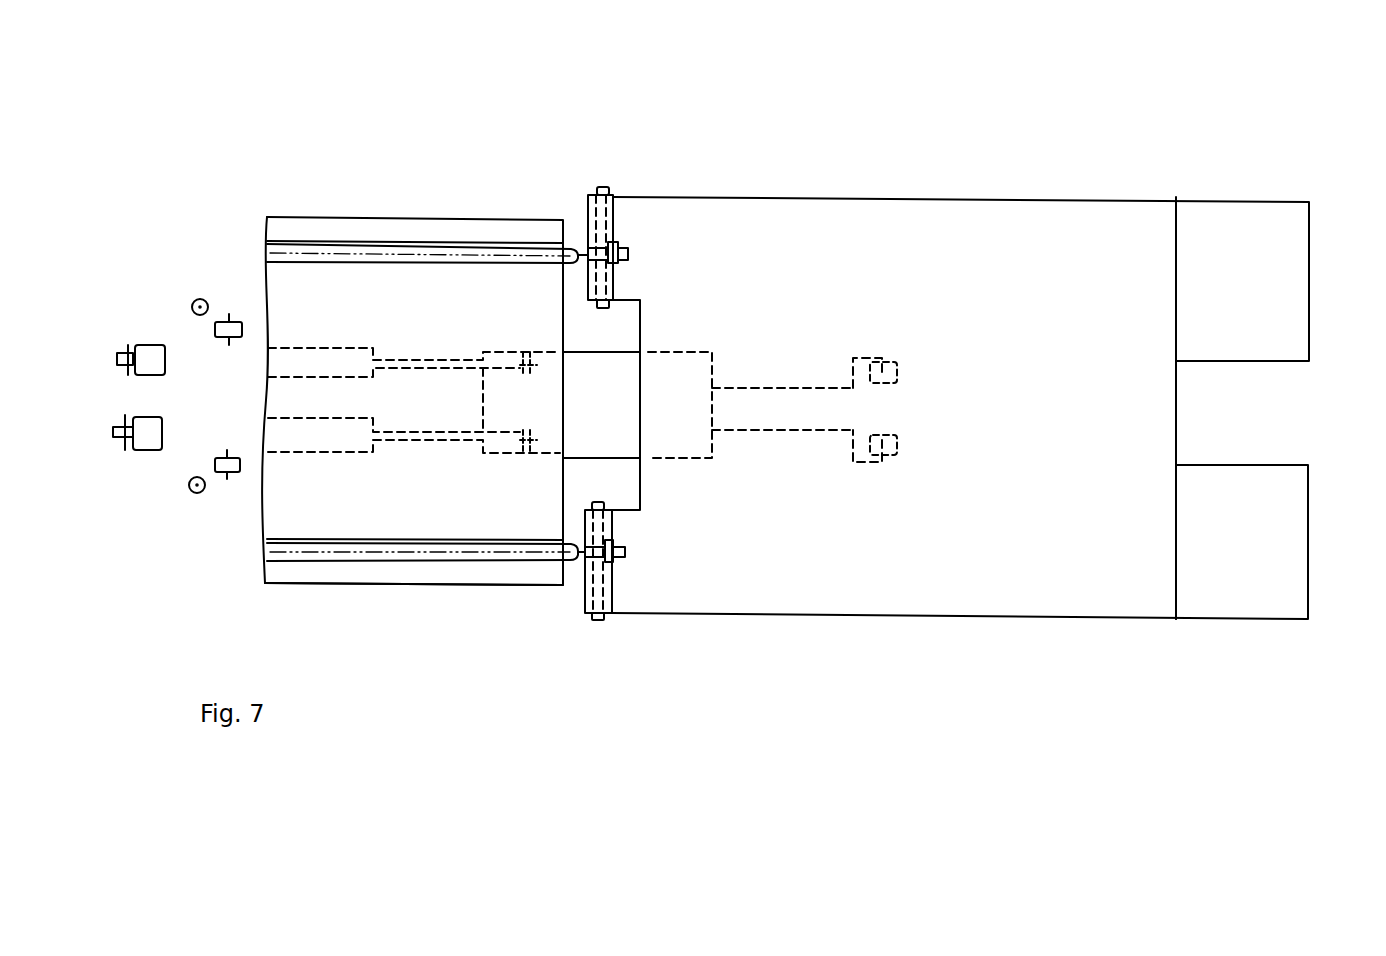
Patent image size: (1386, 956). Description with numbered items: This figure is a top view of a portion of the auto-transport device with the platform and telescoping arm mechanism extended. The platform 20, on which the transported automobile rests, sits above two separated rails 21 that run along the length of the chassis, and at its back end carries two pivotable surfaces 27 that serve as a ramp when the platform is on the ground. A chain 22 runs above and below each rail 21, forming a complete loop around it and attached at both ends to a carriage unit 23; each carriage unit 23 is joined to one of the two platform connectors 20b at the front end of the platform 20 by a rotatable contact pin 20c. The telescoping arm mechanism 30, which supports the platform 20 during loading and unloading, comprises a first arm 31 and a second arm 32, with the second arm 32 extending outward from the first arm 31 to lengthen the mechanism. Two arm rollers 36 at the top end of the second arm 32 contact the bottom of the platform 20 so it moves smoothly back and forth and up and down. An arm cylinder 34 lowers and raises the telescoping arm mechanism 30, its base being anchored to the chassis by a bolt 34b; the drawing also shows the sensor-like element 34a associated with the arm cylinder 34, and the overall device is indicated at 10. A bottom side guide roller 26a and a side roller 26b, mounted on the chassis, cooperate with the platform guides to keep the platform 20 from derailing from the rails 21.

The drive unit 10 is at (577, 215).
The platform 20 is at (910, 198).
The platform connector 20b is at (632, 210).
The rotatable contact pin 20c is at (602, 187).
The rail 21 is at (305, 260).
The chain 22 is at (357, 252).
The carriage unit 23 is at (618, 220).
The bottom side guide roller 26a is at (223, 320).
The side roller 26b is at (193, 302).
The pivotable surface 27 is at (1284, 285).
The telescoping arm mechanism 30 is at (683, 462).
The first arm 31 is at (682, 368).
The second arm 32 is at (790, 407).
The arm cylinder 34 is at (152, 367).
The sensor tip 34a is at (527, 355).
The bolt 34b is at (127, 348).
The arm roller 36 is at (888, 443).